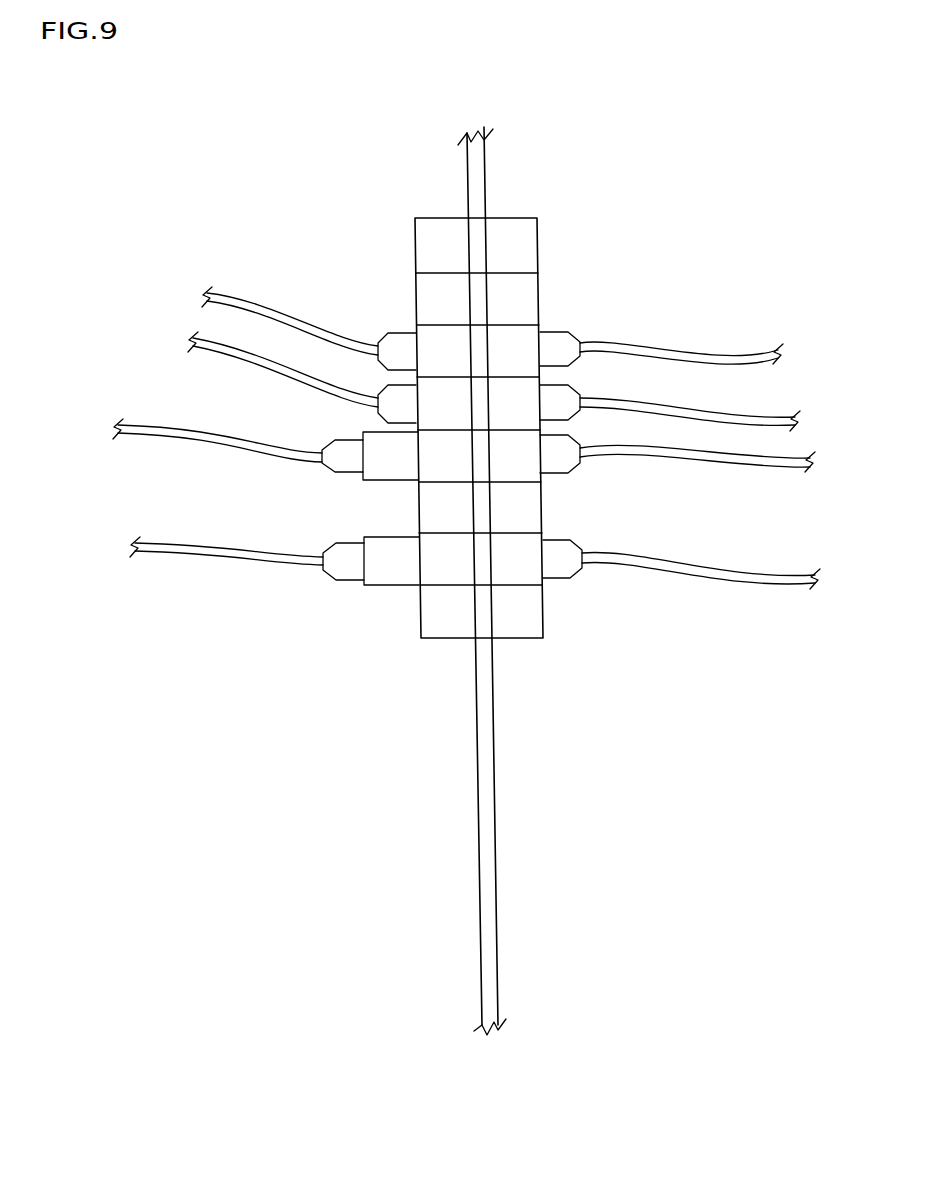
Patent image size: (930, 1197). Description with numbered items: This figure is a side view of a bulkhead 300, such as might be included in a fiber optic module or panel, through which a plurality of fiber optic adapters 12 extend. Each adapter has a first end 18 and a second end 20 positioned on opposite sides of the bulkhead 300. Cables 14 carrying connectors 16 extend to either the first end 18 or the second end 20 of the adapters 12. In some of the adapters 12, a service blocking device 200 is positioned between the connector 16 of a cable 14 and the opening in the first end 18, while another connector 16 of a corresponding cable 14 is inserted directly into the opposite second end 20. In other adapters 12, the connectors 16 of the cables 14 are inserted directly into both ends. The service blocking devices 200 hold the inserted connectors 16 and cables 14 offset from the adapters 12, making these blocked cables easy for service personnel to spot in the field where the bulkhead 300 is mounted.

The fiber optic adapter 12 is at (440, 215).
The cable 14 is at (218, 295).
The connector 16 is at (395, 330).
The first end 18 is at (415, 220).
The second end 20 is at (540, 224).
The service blocking device 200 is at (367, 443).
The bulkhead 300 is at (478, 744).